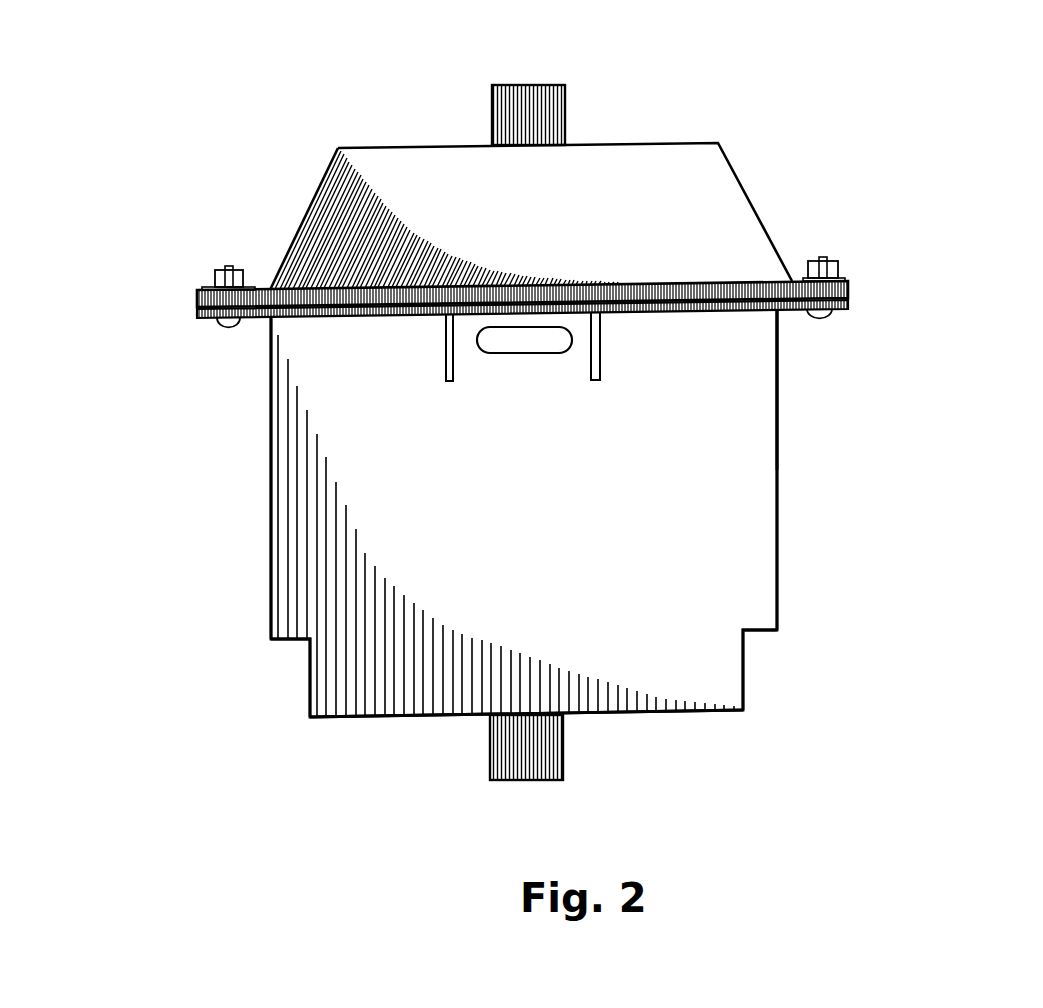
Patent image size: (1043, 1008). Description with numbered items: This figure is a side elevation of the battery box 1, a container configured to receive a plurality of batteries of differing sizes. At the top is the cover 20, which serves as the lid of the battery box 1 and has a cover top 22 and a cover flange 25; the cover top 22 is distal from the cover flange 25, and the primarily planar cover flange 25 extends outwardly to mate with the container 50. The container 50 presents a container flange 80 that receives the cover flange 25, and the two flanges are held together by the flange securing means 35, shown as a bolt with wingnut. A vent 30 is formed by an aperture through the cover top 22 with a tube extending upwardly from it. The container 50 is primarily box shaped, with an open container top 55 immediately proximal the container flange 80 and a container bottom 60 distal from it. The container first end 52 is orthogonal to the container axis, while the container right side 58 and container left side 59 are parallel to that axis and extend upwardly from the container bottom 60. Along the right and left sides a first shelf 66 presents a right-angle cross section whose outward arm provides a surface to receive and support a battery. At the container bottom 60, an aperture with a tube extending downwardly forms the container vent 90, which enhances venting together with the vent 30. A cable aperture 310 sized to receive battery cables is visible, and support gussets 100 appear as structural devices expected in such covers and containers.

The battery box 1 is at (868, 154).
The cover 20 is at (650, 142).
The cover top 22 is at (420, 140).
The cover flange 25 is at (672, 290).
The vent 30 is at (548, 100).
The flange securing means 35 is at (832, 262).
The container 50 is at (747, 498).
The container first end 52 is at (373, 498).
The container top 55 is at (773, 343).
The container right side 58 is at (270, 455).
The container left side 59 is at (780, 568).
The container bottom 60 is at (682, 710).
The first shelf 66 is at (288, 640).
The container flange 80 is at (302, 320).
The container vent 90 is at (490, 737).
The support gussets 100 is at (443, 360).
The cable aperture 310 is at (520, 353).